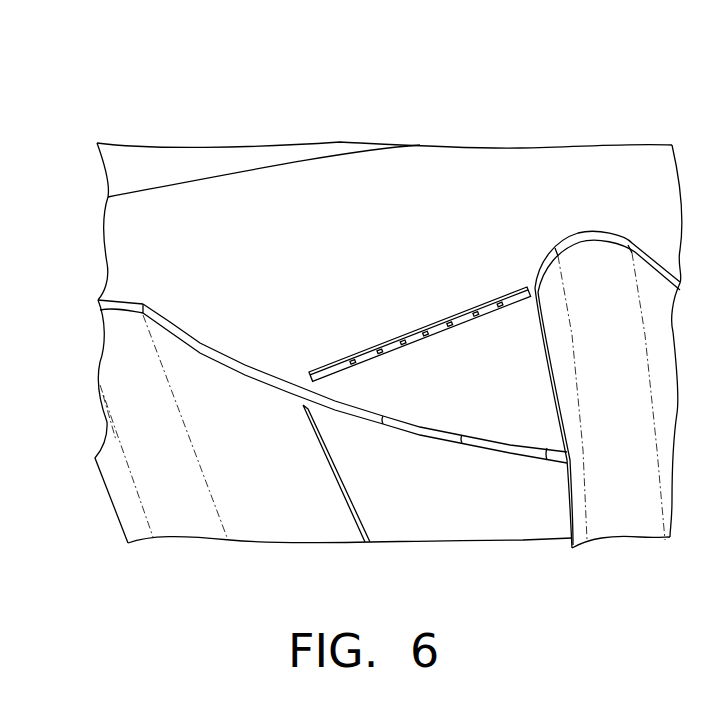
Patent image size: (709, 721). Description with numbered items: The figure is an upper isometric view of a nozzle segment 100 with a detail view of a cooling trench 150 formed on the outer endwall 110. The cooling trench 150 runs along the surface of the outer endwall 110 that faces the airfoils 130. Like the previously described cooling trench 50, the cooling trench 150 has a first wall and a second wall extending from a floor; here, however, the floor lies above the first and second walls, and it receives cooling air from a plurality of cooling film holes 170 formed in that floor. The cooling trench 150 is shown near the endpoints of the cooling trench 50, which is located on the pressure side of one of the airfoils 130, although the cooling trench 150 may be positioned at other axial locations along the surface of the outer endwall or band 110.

The nozzle segment 100 is at (388, 316).
The outer endwall 110 is at (512, 182).
The airfoils 130 is at (172, 483).
The cooling trench 150 is at (405, 304).
The cooling film holes 170 is at (497, 296).
The cooling trench 50 is at (322, 466).